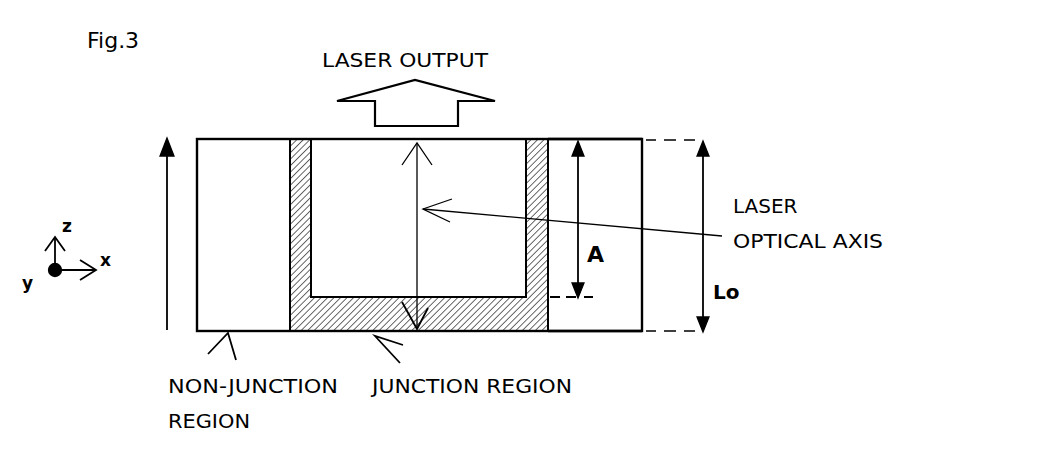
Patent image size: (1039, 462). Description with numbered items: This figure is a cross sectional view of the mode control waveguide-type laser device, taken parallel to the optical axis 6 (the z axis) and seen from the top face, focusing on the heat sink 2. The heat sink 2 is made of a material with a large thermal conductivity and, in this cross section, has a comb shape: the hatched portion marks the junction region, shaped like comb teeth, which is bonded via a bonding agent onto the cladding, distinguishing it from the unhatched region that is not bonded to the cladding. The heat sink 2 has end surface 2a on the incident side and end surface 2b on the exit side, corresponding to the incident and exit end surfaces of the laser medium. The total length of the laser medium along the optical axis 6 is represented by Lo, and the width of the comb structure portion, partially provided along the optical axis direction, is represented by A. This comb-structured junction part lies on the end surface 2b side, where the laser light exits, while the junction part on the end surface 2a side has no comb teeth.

The heat sink 2 is at (637, 222).
The end surface 2a is at (582, 332).
The end surface 2b is at (558, 140).
The optical axis 6 is at (165, 200).